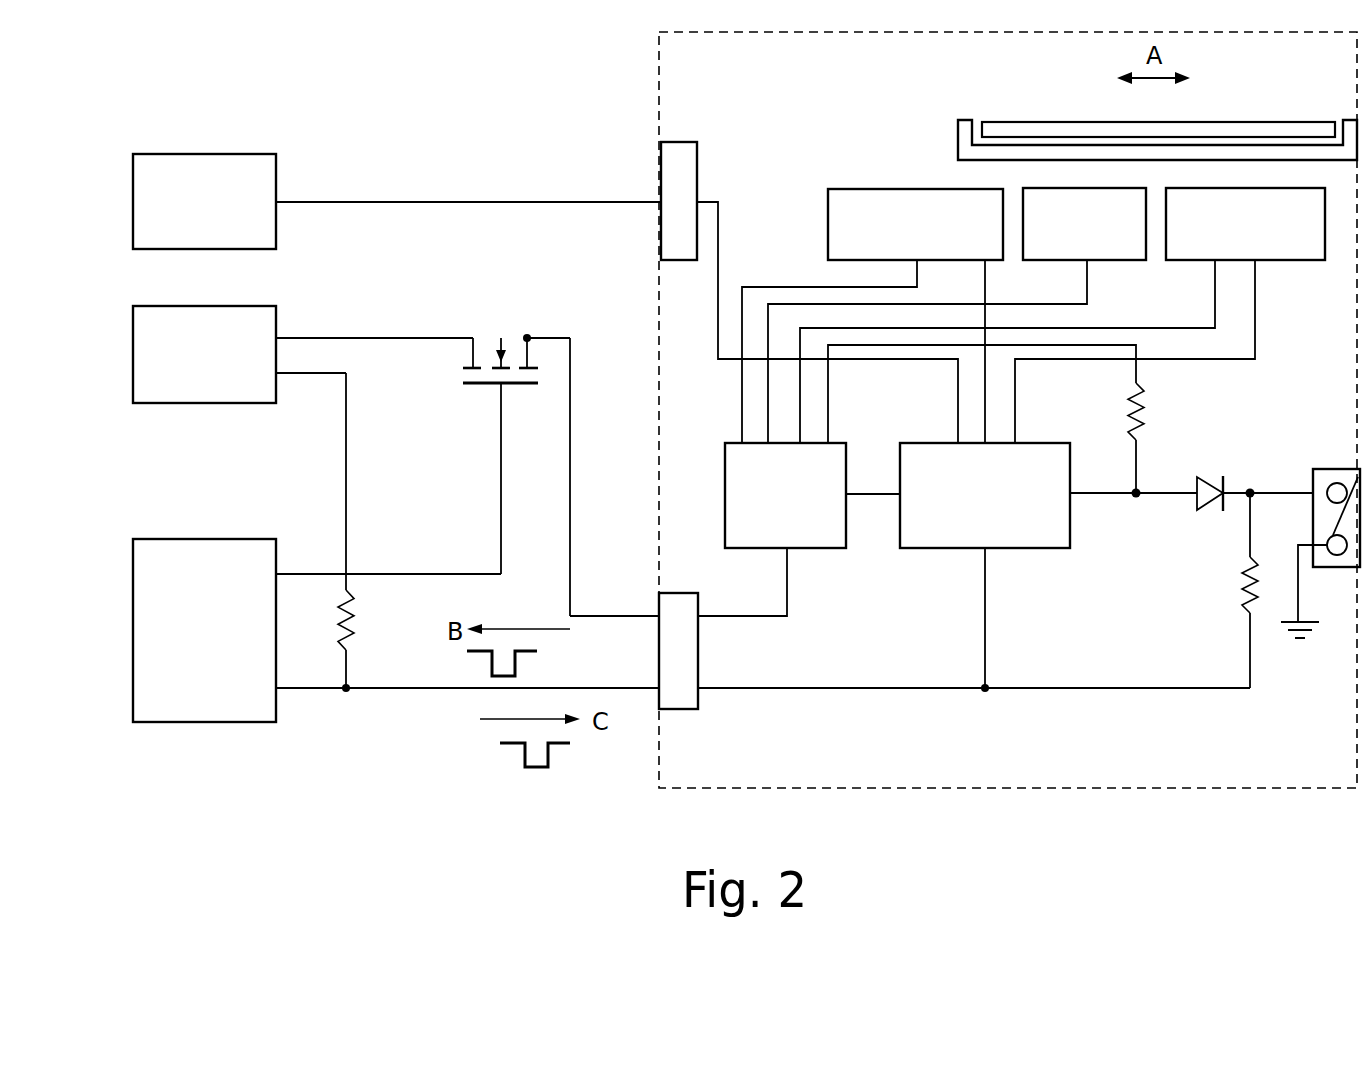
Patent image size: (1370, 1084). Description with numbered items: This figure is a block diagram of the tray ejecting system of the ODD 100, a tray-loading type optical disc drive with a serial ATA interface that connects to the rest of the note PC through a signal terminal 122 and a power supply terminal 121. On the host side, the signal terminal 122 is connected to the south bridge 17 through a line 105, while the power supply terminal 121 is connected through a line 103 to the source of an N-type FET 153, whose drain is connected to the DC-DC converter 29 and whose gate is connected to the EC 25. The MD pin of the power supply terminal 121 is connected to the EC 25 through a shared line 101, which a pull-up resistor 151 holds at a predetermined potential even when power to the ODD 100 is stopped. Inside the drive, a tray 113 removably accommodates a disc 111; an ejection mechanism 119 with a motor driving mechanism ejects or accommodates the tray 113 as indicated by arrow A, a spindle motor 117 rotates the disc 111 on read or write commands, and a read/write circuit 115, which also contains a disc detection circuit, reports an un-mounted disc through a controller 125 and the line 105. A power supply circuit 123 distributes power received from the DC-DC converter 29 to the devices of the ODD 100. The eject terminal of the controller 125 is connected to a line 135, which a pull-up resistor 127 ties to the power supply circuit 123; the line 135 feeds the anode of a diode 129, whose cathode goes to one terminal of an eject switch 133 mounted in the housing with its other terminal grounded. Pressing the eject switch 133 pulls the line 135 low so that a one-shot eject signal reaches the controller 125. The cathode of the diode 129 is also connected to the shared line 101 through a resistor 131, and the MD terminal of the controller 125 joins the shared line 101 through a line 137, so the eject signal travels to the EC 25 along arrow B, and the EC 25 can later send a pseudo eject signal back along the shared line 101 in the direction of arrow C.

The south bridge 17 is at (243, 154).
The line 105 is at (436, 202).
The DC-DC converter 29 is at (276, 308).
The line 103 is at (386, 338).
The N-type FET 153 is at (588, 288).
The EC 25 is at (243, 539).
The pull-up resistor 151 is at (352, 622).
The shared line 101 is at (404, 688).
The ODD 100 is at (722, 75).
The signal terminal 122 is at (690, 142).
The power supply terminal 121 is at (688, 709).
The tray 113 is at (963, 120).
The disc 111 is at (1264, 120).
The read/write circuit 115 is at (893, 189).
The spindle motor 117 is at (1122, 260).
The ejection mechanism 119 is at (1275, 260).
The power supply circuit 123 is at (833, 548).
The controller 125 is at (1035, 548).
The pull-up resistor 127 is at (1140, 432).
The diode 129 is at (1205, 477).
The resistor 131 is at (1240, 600).
The eject switch 133 is at (1337, 469).
The line 135 is at (1105, 496).
The line 137 is at (985, 628).